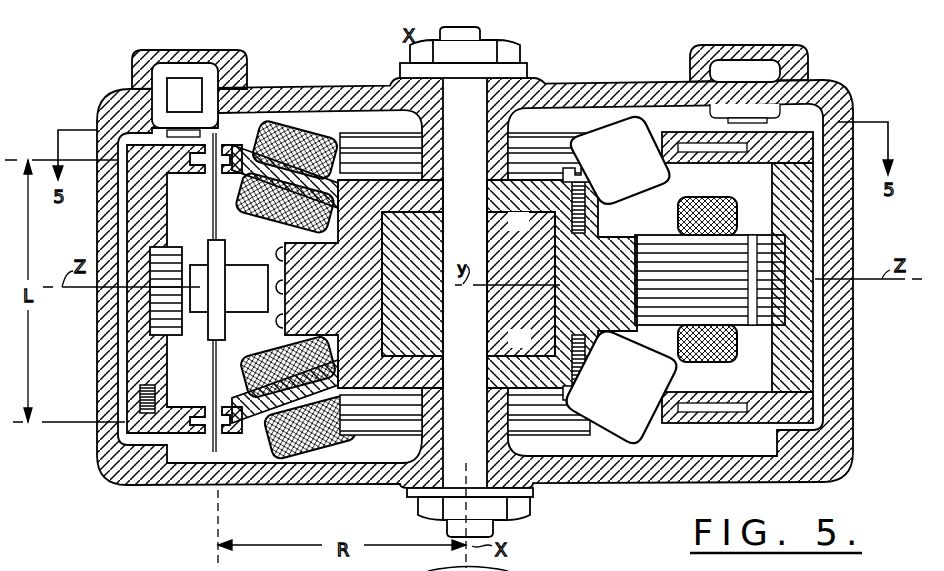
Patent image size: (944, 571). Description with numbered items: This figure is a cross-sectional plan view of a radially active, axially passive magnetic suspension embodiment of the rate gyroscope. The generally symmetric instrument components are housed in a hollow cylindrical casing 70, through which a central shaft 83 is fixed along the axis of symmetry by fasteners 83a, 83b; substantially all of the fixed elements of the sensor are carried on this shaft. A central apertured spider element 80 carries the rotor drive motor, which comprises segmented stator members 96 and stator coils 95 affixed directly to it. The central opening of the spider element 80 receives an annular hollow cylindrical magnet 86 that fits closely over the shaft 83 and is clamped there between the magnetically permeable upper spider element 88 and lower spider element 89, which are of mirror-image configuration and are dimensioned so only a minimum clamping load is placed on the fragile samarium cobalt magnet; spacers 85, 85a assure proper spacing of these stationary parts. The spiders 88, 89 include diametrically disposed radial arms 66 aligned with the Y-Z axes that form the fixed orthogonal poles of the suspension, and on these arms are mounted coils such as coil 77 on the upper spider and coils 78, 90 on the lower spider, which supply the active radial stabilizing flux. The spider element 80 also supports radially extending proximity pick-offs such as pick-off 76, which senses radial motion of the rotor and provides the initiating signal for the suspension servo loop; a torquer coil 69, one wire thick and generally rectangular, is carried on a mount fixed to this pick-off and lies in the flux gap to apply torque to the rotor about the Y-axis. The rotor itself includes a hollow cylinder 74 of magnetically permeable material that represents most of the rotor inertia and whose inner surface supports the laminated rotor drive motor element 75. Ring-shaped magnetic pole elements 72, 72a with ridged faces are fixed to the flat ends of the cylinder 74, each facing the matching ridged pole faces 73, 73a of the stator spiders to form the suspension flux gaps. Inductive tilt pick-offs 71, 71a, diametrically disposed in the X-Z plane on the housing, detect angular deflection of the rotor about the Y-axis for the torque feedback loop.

The radial arms 66 is at (267, 425).
The torquer coil 69 is at (213, 367).
The hollow cylindrical casing 70 is at (107, 117).
The inductive tilt pick-off 71 is at (245, 63).
The inductive tilt pick-off 71a is at (777, 70).
The ring shaped magnetic pole element 72 is at (178, 176).
The ring shaped magnetic pole element 72a is at (188, 408).
The ridged pole face 73 is at (240, 146).
The ridged pole face 73a is at (217, 455).
The hollow cylinder 74 is at (128, 236).
The laminated rotor drive motor element 75 is at (187, 248).
The proximity pick-off 76 is at (242, 262).
The coil 77 is at (327, 140).
The coil 78 is at (340, 436).
The central apertured spider element 80 is at (283, 318).
The central shaft 83 is at (478, 107).
The fastener 83a is at (527, 50).
The fastener 83b is at (533, 503).
The spacer 85 is at (507, 166).
The spacer 85a is at (520, 403).
The annular hollow cylindrical magnet 86 is at (548, 178).
The upper spider element 88 is at (388, 162).
The lower spider element 89 is at (643, 130).
The coil 90 is at (630, 357).
The stator coil 95 is at (713, 199).
The segmented stator member 96 is at (752, 327).